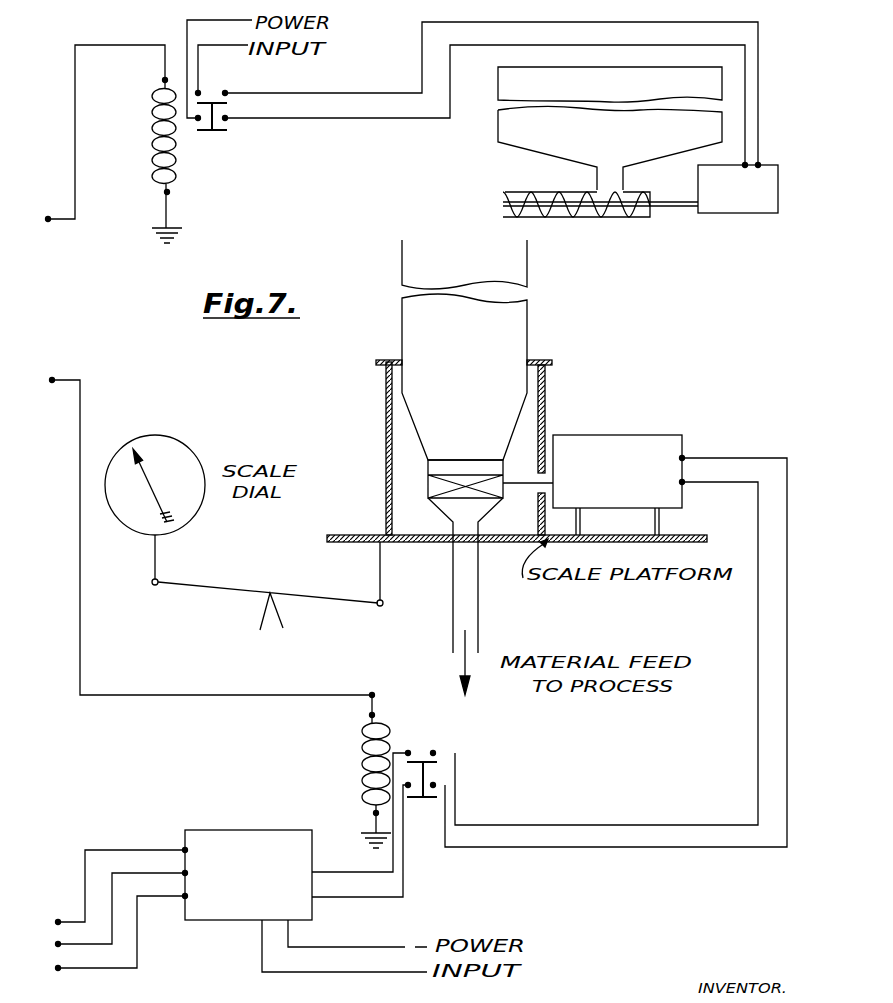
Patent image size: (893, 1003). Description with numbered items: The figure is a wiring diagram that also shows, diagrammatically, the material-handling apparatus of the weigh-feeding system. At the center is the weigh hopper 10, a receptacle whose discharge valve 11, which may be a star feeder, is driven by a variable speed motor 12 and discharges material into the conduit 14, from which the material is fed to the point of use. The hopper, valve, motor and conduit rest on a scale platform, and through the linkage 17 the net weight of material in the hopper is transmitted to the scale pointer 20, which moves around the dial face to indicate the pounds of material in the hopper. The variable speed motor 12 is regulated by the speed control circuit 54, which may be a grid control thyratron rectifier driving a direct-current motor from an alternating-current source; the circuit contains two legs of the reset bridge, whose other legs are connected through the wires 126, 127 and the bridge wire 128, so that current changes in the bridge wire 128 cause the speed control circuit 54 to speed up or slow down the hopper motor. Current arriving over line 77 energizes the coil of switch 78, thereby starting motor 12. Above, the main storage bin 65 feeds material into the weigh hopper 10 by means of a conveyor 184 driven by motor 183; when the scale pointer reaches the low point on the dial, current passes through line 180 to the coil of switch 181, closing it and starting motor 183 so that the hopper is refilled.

The weigh hopper 10 is at (530, 327).
The discharge valve 11 is at (467, 472).
The variable speed motor 12 is at (652, 435).
The conduit 14 is at (482, 620).
The linkage 17 is at (236, 575).
The scale pointer 20 is at (152, 472).
The speed control circuit 54 is at (280, 808).
The main storage bin 65 is at (497, 137).
The line 77 is at (56, 380).
The switch 78 is at (455, 775).
The wire 126 is at (75, 920).
The wire 127 is at (95, 970).
The bridge wire 128 is at (98, 946).
The line 180 is at (62, 222).
The switch 181 is at (203, 132).
The motor 183 is at (738, 215).
The conveyor 184 is at (607, 217).